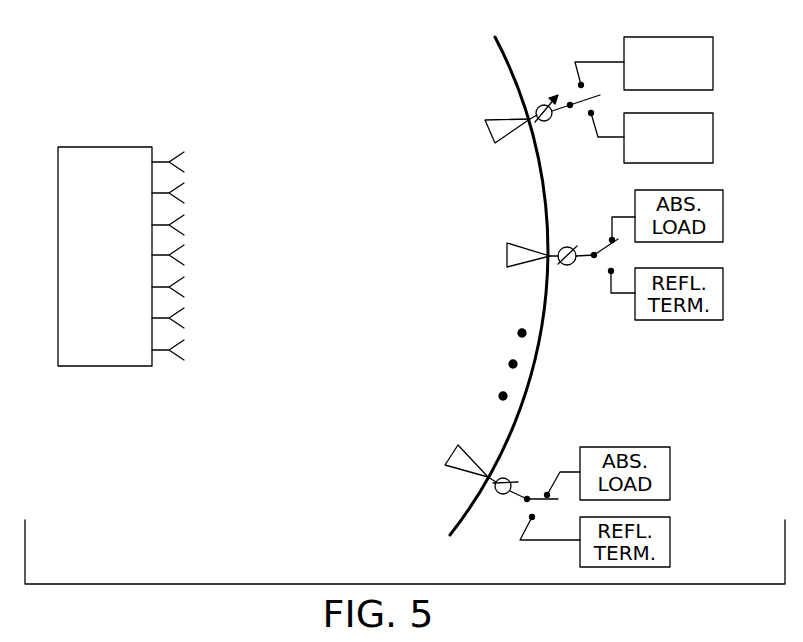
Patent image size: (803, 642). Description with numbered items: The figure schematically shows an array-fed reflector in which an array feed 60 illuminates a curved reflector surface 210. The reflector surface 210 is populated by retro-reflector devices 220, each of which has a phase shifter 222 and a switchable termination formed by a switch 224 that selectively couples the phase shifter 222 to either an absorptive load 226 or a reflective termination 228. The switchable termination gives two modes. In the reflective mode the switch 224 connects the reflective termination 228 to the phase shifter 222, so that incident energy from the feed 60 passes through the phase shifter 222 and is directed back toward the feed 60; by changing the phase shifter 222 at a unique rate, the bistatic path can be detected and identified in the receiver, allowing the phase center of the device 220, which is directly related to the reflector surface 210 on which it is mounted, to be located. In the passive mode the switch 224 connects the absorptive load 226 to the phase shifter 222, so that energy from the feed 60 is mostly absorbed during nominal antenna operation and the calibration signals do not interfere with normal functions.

The array feed 60 is at (102, 147).
The reflector surface 210 is at (548, 188).
The retro-reflector device 220 is at (500, 118).
The phase shifter 222 is at (550, 128).
The switch 224 is at (581, 85).
The absorptive load 226 is at (713, 62).
The reflective termination 228 is at (713, 135).